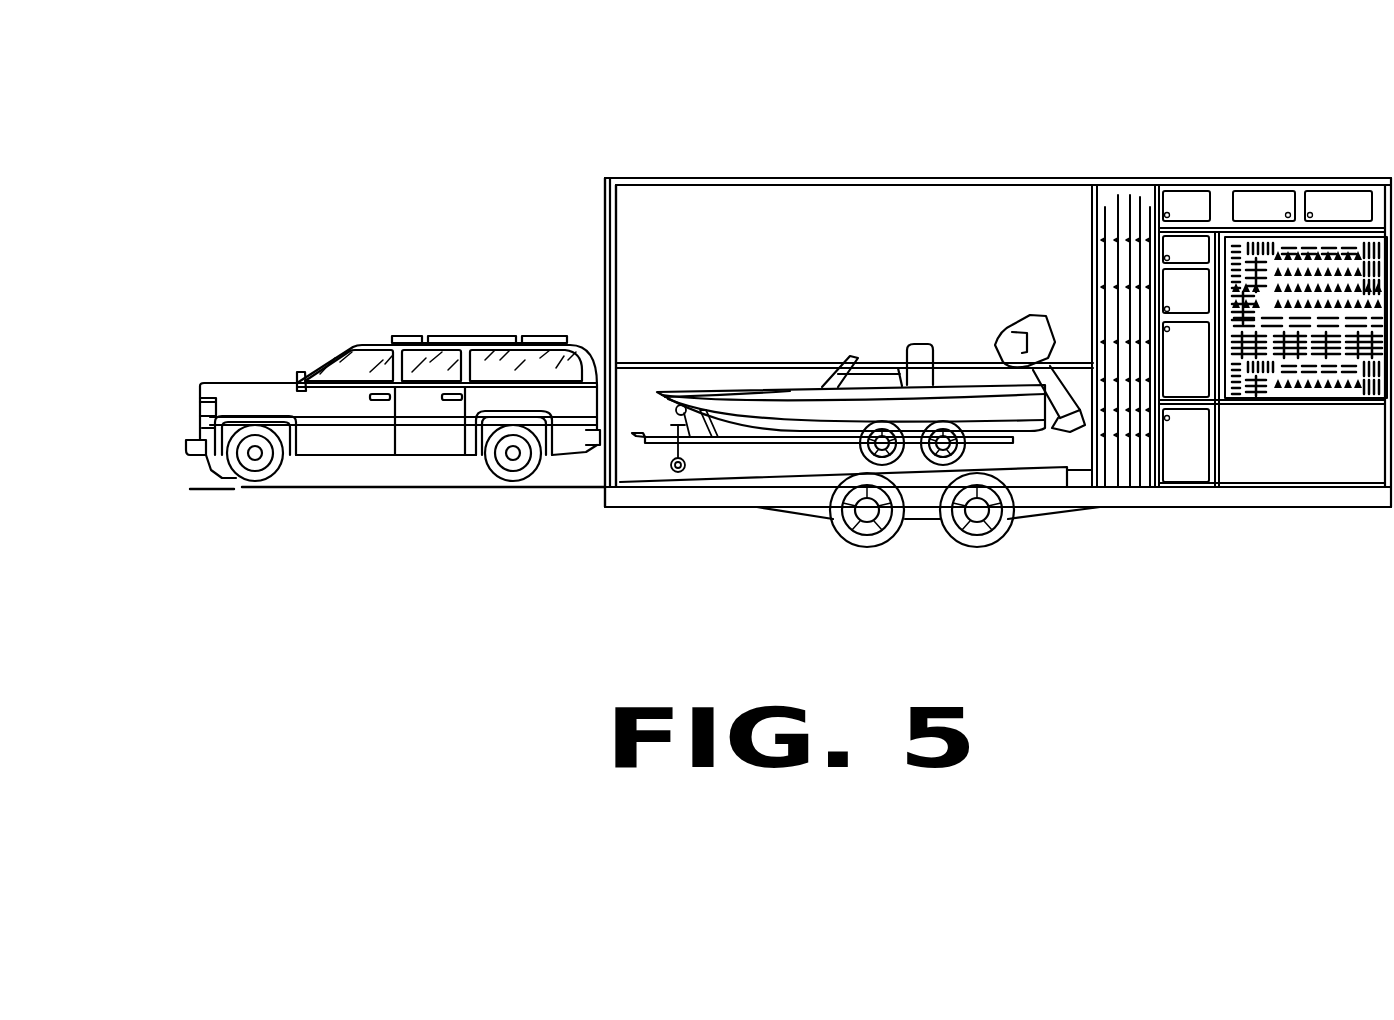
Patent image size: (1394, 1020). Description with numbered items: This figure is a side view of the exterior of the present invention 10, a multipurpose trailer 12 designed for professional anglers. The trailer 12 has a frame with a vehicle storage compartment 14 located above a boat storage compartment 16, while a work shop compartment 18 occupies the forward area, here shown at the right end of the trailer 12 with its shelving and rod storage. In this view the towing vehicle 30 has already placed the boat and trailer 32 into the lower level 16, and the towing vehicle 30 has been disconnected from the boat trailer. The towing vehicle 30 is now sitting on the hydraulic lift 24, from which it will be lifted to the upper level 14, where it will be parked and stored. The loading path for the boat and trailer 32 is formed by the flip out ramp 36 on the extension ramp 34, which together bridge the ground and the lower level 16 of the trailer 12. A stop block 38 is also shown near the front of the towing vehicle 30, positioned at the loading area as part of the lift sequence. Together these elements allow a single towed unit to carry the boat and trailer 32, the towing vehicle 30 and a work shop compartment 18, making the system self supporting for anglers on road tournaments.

The present invention 10 is at (1059, 136).
The multipurpose trailer 12 is at (868, 182).
The vehicle storage compartment 14 is at (920, 280).
The boat storage compartment 16 is at (747, 463).
The work shop compartment 18 is at (1262, 495).
The hydraulic lift 24 is at (607, 336).
The towing vehicle 30 is at (392, 335).
The boat and trailer 32 is at (745, 362).
The extension ramp 34 is at (265, 499).
The flip out ramp 36 is at (223, 430).
The stop block 38 is at (230, 480).